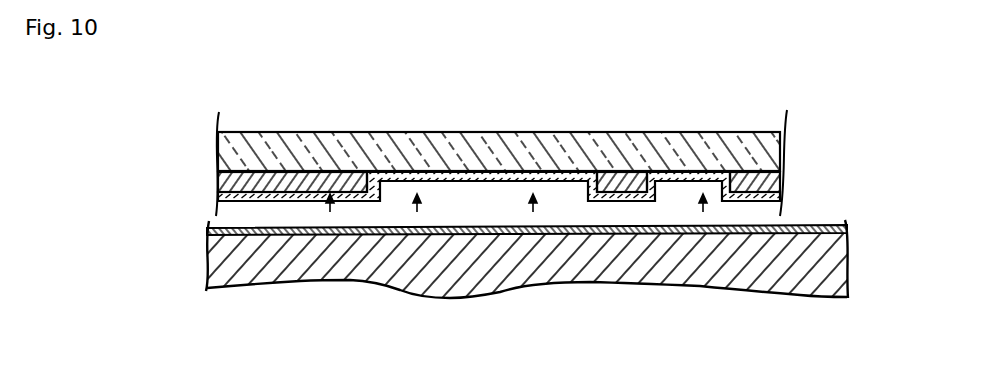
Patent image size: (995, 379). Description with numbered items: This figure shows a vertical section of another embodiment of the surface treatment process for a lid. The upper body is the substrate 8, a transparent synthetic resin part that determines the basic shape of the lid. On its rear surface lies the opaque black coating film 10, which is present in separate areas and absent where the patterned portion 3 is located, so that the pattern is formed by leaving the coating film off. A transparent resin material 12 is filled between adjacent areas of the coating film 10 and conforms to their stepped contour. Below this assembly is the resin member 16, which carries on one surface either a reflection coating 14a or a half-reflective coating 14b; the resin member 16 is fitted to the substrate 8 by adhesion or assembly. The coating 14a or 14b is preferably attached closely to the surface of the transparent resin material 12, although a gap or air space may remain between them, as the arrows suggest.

The patterned portion 3 is at (553, 183).
The substrate 8 is at (357, 166).
The coating film 10 is at (283, 171).
The transparent resin material 12 is at (446, 172).
The reflection coating 14a is at (210, 230).
The half-reflective coating 14b is at (450, 237).
The resin member 16 is at (210, 265).